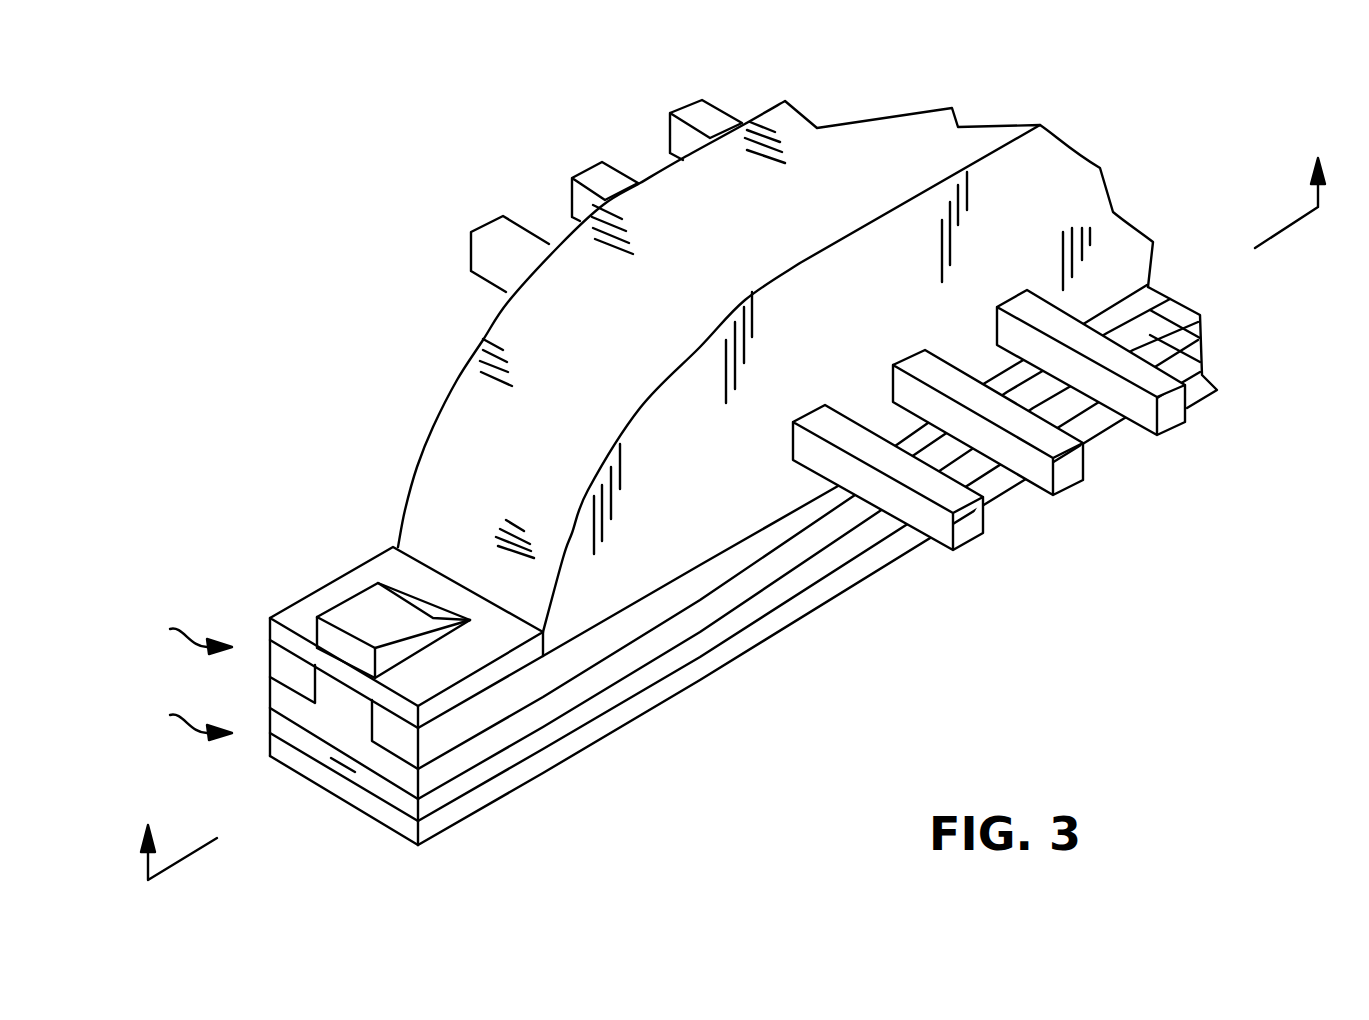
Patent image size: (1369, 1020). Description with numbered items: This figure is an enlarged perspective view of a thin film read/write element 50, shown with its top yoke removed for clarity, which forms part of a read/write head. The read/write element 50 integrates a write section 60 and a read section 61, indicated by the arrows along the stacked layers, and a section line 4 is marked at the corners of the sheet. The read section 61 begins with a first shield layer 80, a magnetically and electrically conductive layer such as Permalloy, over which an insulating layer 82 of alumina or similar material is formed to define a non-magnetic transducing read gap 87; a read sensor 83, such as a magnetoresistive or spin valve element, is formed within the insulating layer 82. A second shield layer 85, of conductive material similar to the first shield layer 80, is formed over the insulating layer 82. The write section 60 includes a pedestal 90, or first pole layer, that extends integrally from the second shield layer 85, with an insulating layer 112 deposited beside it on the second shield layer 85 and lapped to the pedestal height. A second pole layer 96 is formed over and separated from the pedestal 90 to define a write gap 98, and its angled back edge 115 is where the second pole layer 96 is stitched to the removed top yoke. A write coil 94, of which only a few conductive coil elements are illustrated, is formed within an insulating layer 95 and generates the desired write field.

The section line 4- 4 is at (732, 498).
The read/write element 50 is at (461, 88).
The write section 60 is at (176, 633).
The read section 61 is at (180, 719).
The first shield layer 80 is at (667, 697).
The insulating layer 82 is at (492, 767).
The read sensor 83 is at (348, 766).
The second shield layer 85 is at (520, 723).
The read gap 87 is at (809, 608).
The pedestal 90 is at (335, 713).
The write coil 94 is at (1173, 420).
The insulating layer 95 is at (910, 326).
The second pole layer 96 is at (354, 590).
The write gap 98 is at (290, 636).
The insulating layer 112 is at (697, 590).
The angled back edge 115 is at (416, 597).